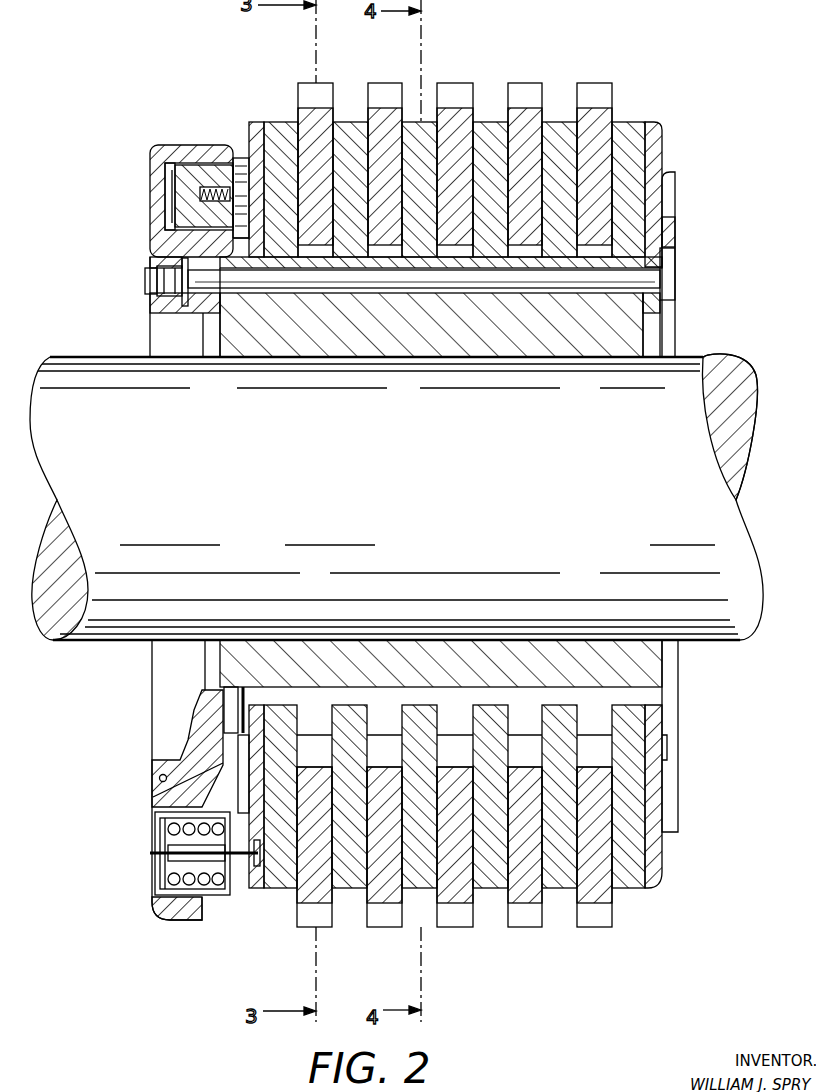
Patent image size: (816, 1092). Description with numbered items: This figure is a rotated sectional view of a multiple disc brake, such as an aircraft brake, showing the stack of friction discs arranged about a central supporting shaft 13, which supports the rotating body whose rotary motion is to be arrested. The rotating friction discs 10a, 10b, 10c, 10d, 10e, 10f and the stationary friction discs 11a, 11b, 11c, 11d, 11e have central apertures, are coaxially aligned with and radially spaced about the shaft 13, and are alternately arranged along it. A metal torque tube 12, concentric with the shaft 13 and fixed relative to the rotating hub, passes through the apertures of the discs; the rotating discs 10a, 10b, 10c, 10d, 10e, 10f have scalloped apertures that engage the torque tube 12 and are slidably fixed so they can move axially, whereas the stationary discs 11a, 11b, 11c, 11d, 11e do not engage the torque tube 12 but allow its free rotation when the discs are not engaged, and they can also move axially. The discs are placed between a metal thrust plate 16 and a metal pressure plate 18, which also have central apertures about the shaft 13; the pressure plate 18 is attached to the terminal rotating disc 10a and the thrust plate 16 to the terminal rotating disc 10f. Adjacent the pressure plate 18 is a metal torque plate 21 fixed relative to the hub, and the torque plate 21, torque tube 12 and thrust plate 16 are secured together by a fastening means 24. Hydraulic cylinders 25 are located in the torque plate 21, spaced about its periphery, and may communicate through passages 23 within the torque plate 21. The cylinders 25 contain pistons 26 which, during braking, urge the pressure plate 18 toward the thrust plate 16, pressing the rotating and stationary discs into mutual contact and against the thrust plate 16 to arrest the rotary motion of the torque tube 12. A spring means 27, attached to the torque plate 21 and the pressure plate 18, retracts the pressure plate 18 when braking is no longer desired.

The rotating friction disc 10a is at (278, 122).
The rotating friction disc 10b is at (357, 121).
The rotating friction disc 10c is at (430, 121).
The rotating friction disc 10d is at (488, 121).
The rotating friction disc 10e is at (560, 121).
The rotating friction disc 10f is at (638, 121).
The stationary friction disc 11a is at (301, 82).
The stationary friction disc 11b is at (385, 82).
The stationary friction disc 11c is at (451, 82).
The stationary friction disc 11d is at (526, 82).
The stationary friction disc 11e is at (602, 82).
The torque tube 12 is at (630, 338).
The central supporting shaft 13 is at (717, 357).
The thrust plate 16 is at (676, 226).
The pressure plate 18 is at (248, 153).
The torque plate 21 is at (150, 204).
The passages 23 is at (152, 767).
The fastening means 24 is at (147, 284).
The hydraulic cylinders 25 is at (177, 184).
The pistons 26 is at (187, 218).
The spring means 27 is at (143, 858).